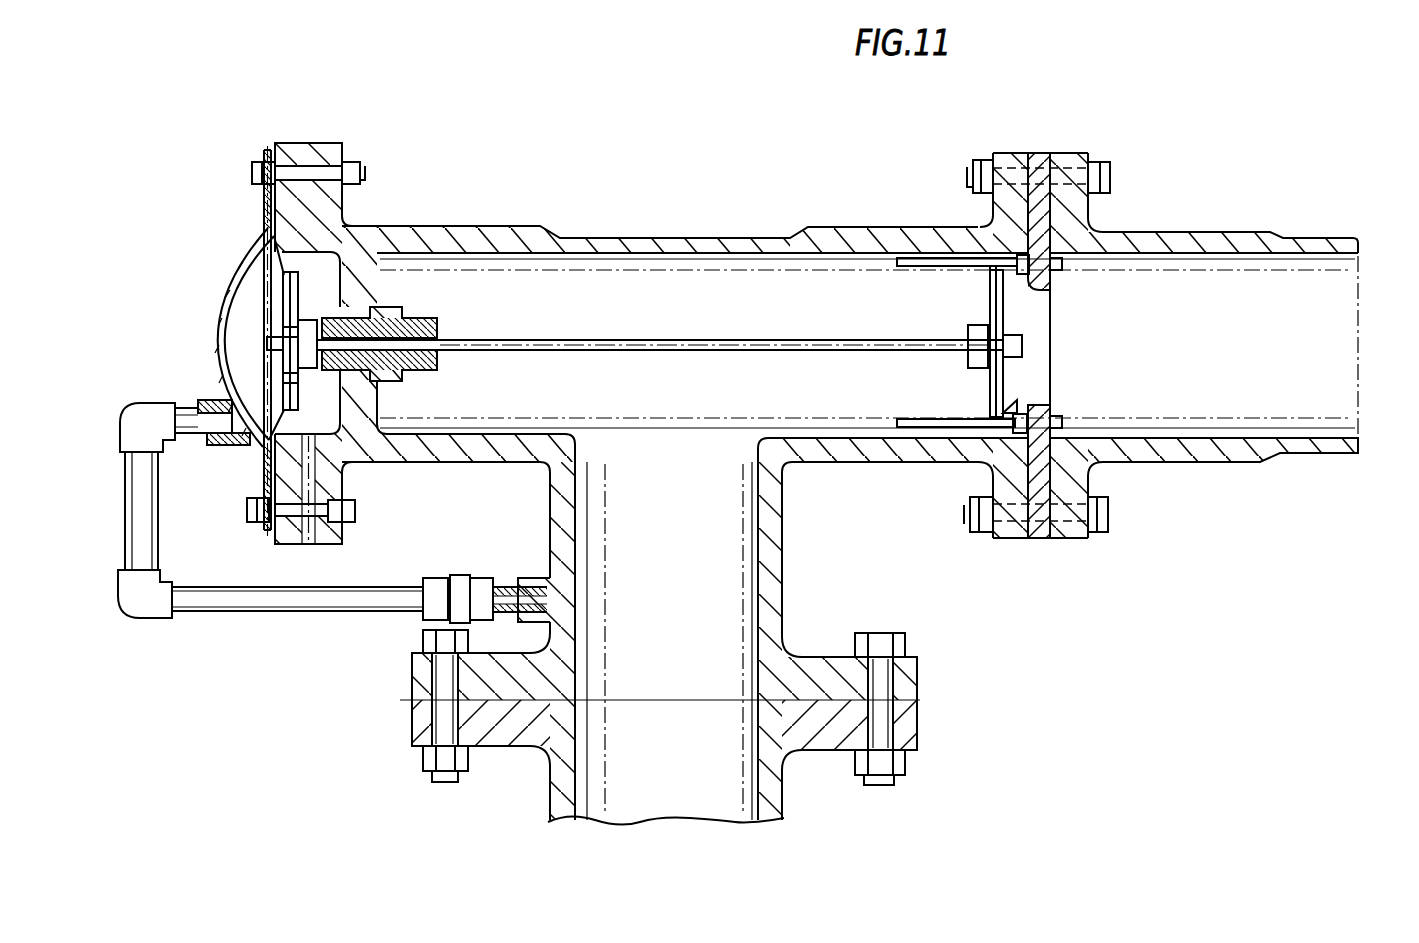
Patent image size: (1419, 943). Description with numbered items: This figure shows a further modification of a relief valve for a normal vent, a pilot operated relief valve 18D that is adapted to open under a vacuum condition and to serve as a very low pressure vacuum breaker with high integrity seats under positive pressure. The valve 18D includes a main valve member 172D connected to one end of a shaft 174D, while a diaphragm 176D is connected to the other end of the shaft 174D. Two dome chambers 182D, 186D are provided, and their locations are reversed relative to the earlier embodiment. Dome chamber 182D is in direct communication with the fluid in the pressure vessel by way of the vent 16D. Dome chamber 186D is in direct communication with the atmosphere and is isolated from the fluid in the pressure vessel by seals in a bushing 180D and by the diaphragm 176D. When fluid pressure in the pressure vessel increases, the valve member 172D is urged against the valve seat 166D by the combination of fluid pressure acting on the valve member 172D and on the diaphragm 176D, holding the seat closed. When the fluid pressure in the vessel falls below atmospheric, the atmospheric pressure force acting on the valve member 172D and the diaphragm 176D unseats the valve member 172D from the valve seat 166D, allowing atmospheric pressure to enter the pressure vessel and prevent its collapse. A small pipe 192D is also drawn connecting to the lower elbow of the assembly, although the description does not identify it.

The vent 16D is at (689, 672).
The pilot operated relief valve 18D is at (671, 230).
The valve seat 166D is at (992, 283).
The main valve member 172D is at (1003, 313).
The shaft 174D is at (688, 356).
The diaphragm 176D is at (273, 262).
The bushing 180D is at (403, 303).
The dome chamber 182D is at (240, 360).
The dome chamber 186D is at (325, 404).
The pressure pipe 192D is at (305, 627).